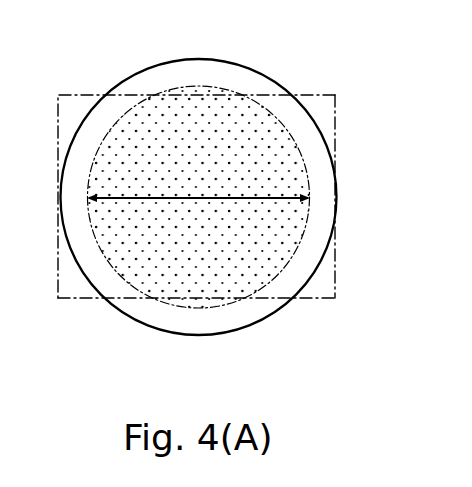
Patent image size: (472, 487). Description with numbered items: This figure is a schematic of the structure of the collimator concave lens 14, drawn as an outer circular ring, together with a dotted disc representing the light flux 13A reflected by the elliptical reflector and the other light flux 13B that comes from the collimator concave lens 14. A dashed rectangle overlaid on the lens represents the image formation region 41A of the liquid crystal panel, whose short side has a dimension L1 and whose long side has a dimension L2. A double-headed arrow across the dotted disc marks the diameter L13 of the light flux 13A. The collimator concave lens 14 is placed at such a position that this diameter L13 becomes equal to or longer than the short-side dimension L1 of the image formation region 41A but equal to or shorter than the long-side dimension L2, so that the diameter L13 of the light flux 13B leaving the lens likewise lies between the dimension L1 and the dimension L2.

The collimator concave lens 14 is at (185, 58).
The light flux 13A is at (199, 157).
The light flux 13B is at (222, 86).
The image formation region 41A is at (240, 210).
The dimension of the short side L1 is at (337, 105).
The dimension of the long side L2 is at (268, 299).
The diameter of the light flux L13 is at (228, 195).